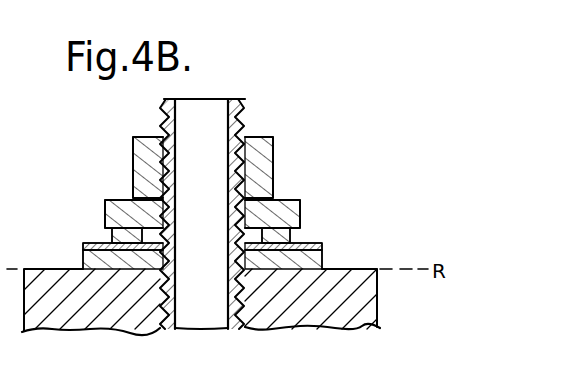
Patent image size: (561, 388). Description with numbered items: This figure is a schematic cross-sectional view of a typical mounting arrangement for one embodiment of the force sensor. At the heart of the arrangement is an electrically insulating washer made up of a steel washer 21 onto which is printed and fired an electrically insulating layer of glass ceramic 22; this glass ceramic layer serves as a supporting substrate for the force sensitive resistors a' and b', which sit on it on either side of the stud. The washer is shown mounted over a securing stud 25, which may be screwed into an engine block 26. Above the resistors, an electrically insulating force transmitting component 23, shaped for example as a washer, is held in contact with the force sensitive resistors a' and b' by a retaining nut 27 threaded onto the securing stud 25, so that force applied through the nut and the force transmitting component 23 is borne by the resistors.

The steel washer 21 is at (97, 261).
The electrically insulating layer of glass ceramic 22 is at (306, 243).
The electrically insulating force transmitting component 23 is at (116, 216).
The securing stud 25 is at (201, 117).
The engine block 26 is at (362, 297).
The retaining nut 27 is at (148, 143).
The force sensitive resistor a' is at (106, 173).
The force sensitive resistor b' is at (296, 176).